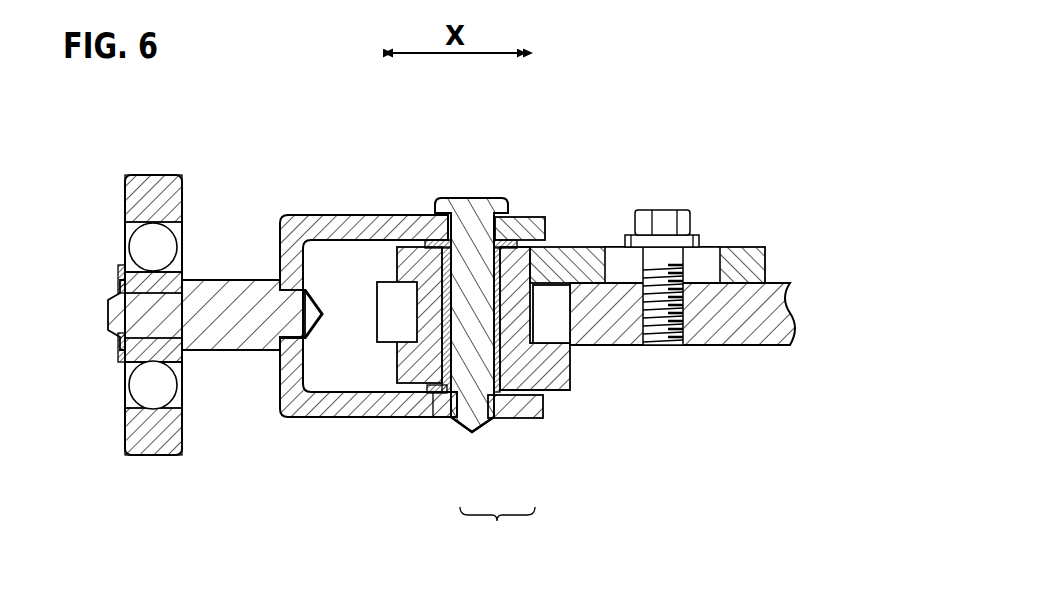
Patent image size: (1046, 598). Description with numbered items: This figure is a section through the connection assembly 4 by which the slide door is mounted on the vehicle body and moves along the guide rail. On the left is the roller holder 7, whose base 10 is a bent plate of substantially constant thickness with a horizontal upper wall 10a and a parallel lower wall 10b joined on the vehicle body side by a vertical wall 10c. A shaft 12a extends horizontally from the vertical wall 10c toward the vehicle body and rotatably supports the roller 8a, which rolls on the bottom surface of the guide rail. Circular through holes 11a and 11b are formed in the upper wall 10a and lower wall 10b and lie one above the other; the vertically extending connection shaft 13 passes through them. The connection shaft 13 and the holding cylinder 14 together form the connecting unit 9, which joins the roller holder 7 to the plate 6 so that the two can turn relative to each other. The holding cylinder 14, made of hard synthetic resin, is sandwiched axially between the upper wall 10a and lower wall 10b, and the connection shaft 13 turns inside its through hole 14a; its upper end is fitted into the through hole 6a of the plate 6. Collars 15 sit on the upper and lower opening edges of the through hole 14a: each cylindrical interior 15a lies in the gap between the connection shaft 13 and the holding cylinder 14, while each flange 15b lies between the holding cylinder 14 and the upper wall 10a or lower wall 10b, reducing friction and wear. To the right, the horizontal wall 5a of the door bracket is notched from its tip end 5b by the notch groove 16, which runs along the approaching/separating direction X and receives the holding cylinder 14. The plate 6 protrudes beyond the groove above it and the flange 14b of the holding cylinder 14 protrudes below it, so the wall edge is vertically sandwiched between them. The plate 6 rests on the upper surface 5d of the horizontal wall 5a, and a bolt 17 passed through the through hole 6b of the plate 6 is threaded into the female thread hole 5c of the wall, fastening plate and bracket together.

The connection assembly 4 is at (305, 152).
The horizontal wall 5a is at (732, 323).
The tip end 5b is at (405, 293).
The female thread hole 5c is at (673, 346).
The upper surface 5d is at (790, 284).
The plate 6 is at (653, 204).
The through hole 6a is at (510, 222).
The through hole 6b is at (702, 250).
The roller holder 7 is at (339, 317).
The roller 8a is at (125, 183).
The connecting unit 9 is at (497, 537).
The base 10 is at (350, 317).
The upper wall 10a is at (355, 215).
The lower wall 10b is at (322, 417).
The vertical wall 10c is at (290, 378).
The through hole 11a is at (446, 198).
The through hole 11b is at (460, 426).
The shaft 12a is at (216, 352).
The connection shaft 13 is at (463, 334).
The holding cylinder 14 is at (463, 383).
The through hole 14a is at (432, 330).
The flange 14b is at (546, 388).
The collar 15 is at (451, 321).
The cylindrical interior 15a is at (432, 282).
The flange 15b is at (510, 245).
The notch groove 16 is at (556, 344).
The bolt 17 is at (665, 210).